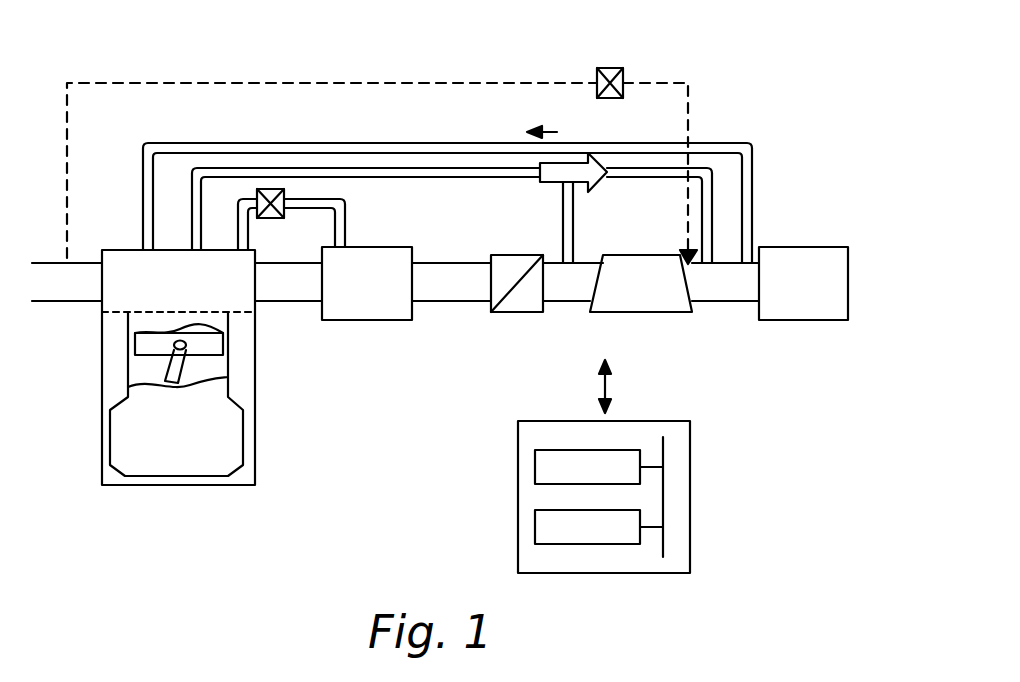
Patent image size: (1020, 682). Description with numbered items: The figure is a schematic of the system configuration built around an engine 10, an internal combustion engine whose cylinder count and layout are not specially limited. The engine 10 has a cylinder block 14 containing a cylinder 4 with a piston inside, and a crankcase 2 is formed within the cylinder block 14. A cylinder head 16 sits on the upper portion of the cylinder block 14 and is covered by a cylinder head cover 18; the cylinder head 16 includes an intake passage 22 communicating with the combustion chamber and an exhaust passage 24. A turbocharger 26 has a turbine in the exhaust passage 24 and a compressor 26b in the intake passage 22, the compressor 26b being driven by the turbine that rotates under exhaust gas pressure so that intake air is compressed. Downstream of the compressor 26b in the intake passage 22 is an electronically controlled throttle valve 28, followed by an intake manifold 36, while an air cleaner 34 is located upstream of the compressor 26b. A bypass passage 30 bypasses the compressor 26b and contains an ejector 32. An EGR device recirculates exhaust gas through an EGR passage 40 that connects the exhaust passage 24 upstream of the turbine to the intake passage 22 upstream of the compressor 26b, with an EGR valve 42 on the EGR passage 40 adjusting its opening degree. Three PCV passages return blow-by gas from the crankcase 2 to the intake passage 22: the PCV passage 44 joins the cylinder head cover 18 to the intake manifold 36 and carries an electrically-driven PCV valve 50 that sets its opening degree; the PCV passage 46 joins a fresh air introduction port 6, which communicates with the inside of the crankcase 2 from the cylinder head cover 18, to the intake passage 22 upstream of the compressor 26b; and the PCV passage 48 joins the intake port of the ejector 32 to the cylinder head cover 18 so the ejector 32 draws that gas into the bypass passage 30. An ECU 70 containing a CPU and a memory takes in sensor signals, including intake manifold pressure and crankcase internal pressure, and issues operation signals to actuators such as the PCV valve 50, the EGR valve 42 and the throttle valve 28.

The crankcase 2 is at (127, 457).
The cylinder 4 is at (228, 330).
The fresh air introduction port 6 is at (142, 247).
The engine 10 is at (268, 432).
The cylinder block 14 is at (101, 413).
The cylinder head 16 is at (100, 307).
The cylinder head cover 18 is at (120, 247).
The intake passage 22 is at (443, 302).
The exhaust passage 24 is at (52, 304).
The turbocharger 26 is at (686, 330).
The compressor 26b is at (603, 313).
The throttle valve 28 is at (513, 313).
The bypass passage 30 is at (574, 216).
The ejector 32 is at (548, 183).
The air cleaner 34 is at (787, 321).
The intake manifold 36 is at (348, 321).
The EGR passage 40 is at (118, 82).
The EGR valve 42 is at (600, 68).
The PCV passage 44 is at (346, 205).
The PCV passage 46 is at (753, 176).
The PCV passage 48 is at (452, 182).
The PCV valve 50 is at (278, 219).
The ECU 70 is at (690, 495).